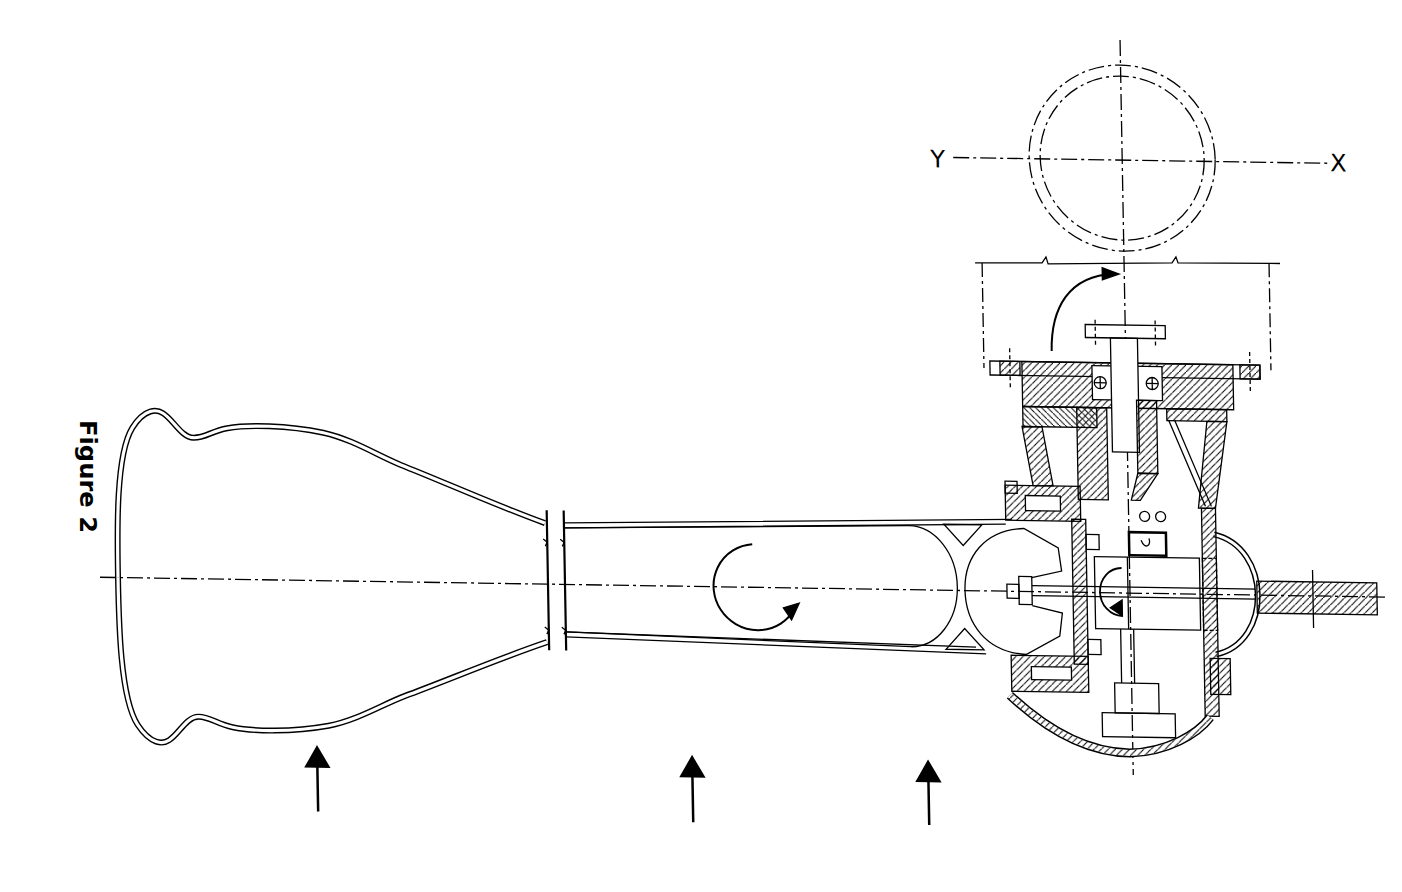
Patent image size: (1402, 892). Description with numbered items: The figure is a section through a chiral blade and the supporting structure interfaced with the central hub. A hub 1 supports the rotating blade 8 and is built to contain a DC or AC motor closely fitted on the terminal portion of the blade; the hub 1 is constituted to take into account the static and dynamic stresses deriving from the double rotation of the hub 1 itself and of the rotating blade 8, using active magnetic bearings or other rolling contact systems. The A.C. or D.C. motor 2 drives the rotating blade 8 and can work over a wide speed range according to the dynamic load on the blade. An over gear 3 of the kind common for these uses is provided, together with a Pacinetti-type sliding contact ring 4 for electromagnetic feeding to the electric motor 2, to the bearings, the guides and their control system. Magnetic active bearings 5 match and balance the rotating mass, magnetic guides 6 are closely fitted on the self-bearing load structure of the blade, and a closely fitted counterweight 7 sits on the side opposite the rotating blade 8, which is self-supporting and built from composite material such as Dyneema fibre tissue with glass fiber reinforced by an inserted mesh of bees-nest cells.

The hub 1 is at (1194, 732).
The motor 2 is at (1216, 647).
The over gear 3 is at (1005, 322).
The sliding contact ring 4 is at (1248, 398).
The magnetic active bearings 5 is at (1004, 497).
The magnetic guides 6 is at (1009, 657).
The counterweight 7 is at (1331, 572).
The rotating blade 8 is at (318, 443).